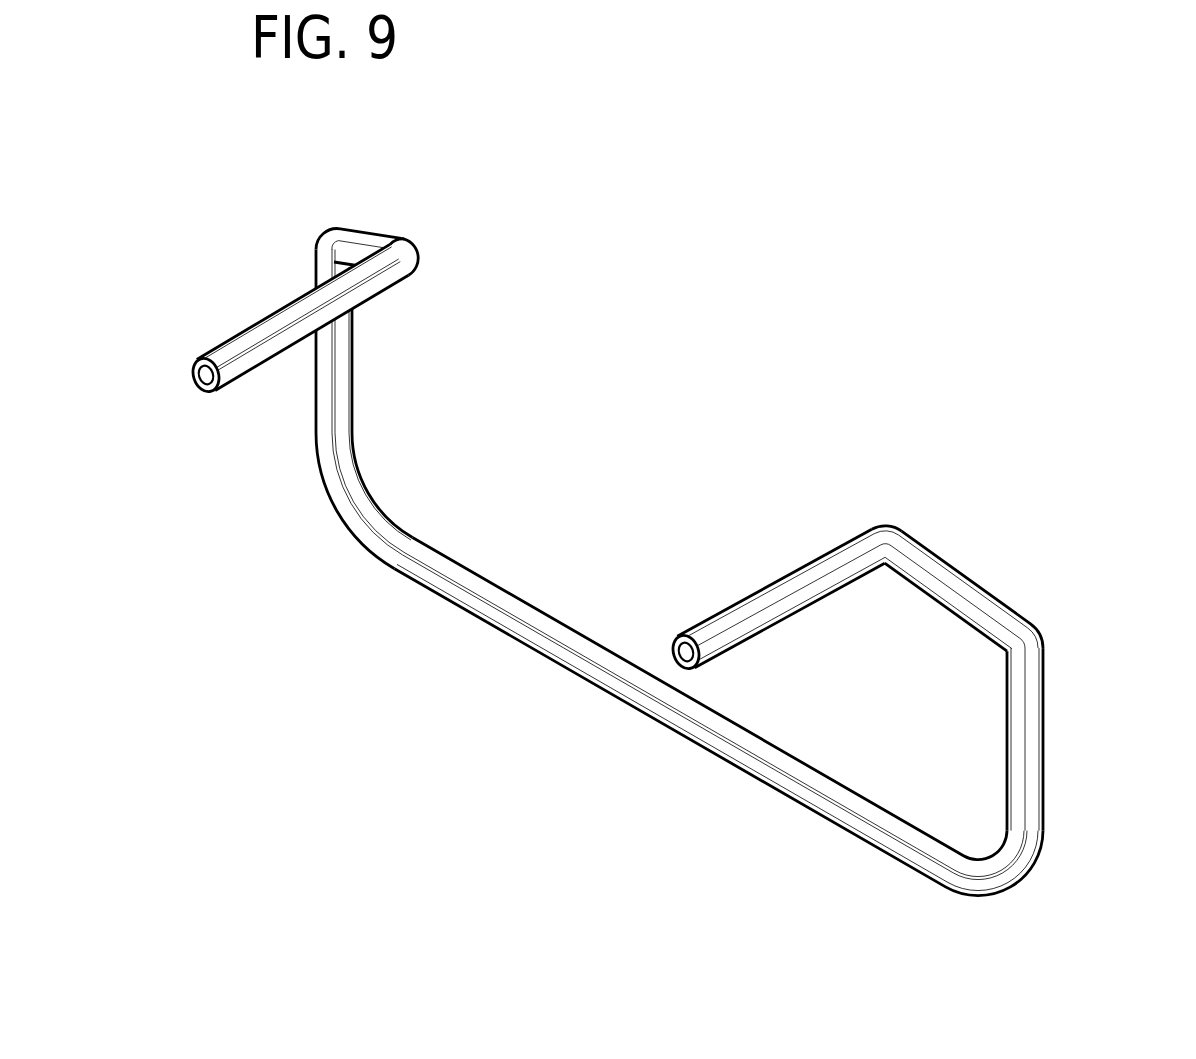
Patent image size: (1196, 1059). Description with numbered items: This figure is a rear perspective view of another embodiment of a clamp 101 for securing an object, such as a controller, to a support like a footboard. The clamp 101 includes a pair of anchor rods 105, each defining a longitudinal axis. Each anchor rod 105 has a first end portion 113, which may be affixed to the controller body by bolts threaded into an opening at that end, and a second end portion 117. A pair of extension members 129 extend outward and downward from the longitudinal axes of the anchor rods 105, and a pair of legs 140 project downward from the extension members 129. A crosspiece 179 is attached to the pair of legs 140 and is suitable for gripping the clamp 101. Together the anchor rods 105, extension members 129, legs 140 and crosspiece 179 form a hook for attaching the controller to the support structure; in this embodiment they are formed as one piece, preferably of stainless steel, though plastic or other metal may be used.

The clamp 101 is at (1022, 497).
The anchor rod 105 is at (237, 357).
The first end portion 113 is at (222, 380).
The second end portion 117 is at (358, 290).
The extension member 129 is at (357, 243).
The leg 140 is at (341, 410).
The crosspiece 179 is at (836, 804).